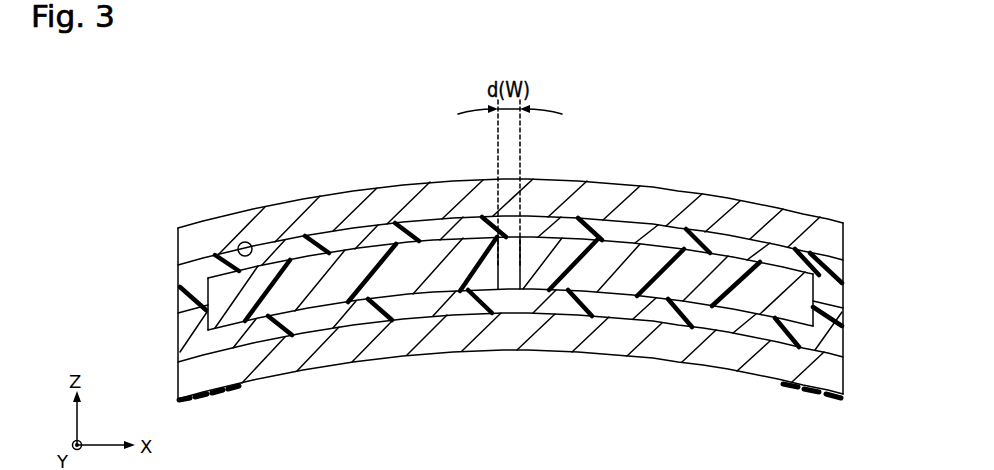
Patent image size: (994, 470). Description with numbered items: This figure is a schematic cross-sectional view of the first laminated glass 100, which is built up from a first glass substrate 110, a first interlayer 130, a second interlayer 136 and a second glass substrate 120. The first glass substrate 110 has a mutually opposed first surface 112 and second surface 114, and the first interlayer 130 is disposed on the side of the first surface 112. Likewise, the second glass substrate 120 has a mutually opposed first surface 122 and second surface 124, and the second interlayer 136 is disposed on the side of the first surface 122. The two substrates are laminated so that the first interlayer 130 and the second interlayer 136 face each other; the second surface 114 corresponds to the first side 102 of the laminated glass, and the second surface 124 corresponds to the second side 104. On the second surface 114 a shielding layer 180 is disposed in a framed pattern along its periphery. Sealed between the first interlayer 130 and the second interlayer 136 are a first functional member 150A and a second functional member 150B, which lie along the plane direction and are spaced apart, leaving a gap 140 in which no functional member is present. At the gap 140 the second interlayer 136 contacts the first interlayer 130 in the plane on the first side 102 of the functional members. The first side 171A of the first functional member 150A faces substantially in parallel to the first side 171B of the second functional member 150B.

The first laminated glass 100 is at (803, 86).
The first side 102 is at (510, 361).
The second side 104 is at (690, 182).
The first glass substrate 110 is at (843, 377).
The first surface 112 is at (713, 323).
The second surface 114 is at (667, 365).
The second glass substrate 120 is at (843, 250).
The first surface 122 is at (243, 242).
The second surface 124 is at (304, 197).
The first interlayer 130 is at (843, 343).
The second interlayer 136 is at (843, 291).
The gap 140 is at (510, 278).
The first functional member 150A is at (415, 303).
The second functional member 150B is at (603, 305).
The first side 171A is at (500, 258).
The first side 171B is at (514, 258).
The shielding layer 180 is at (211, 400).